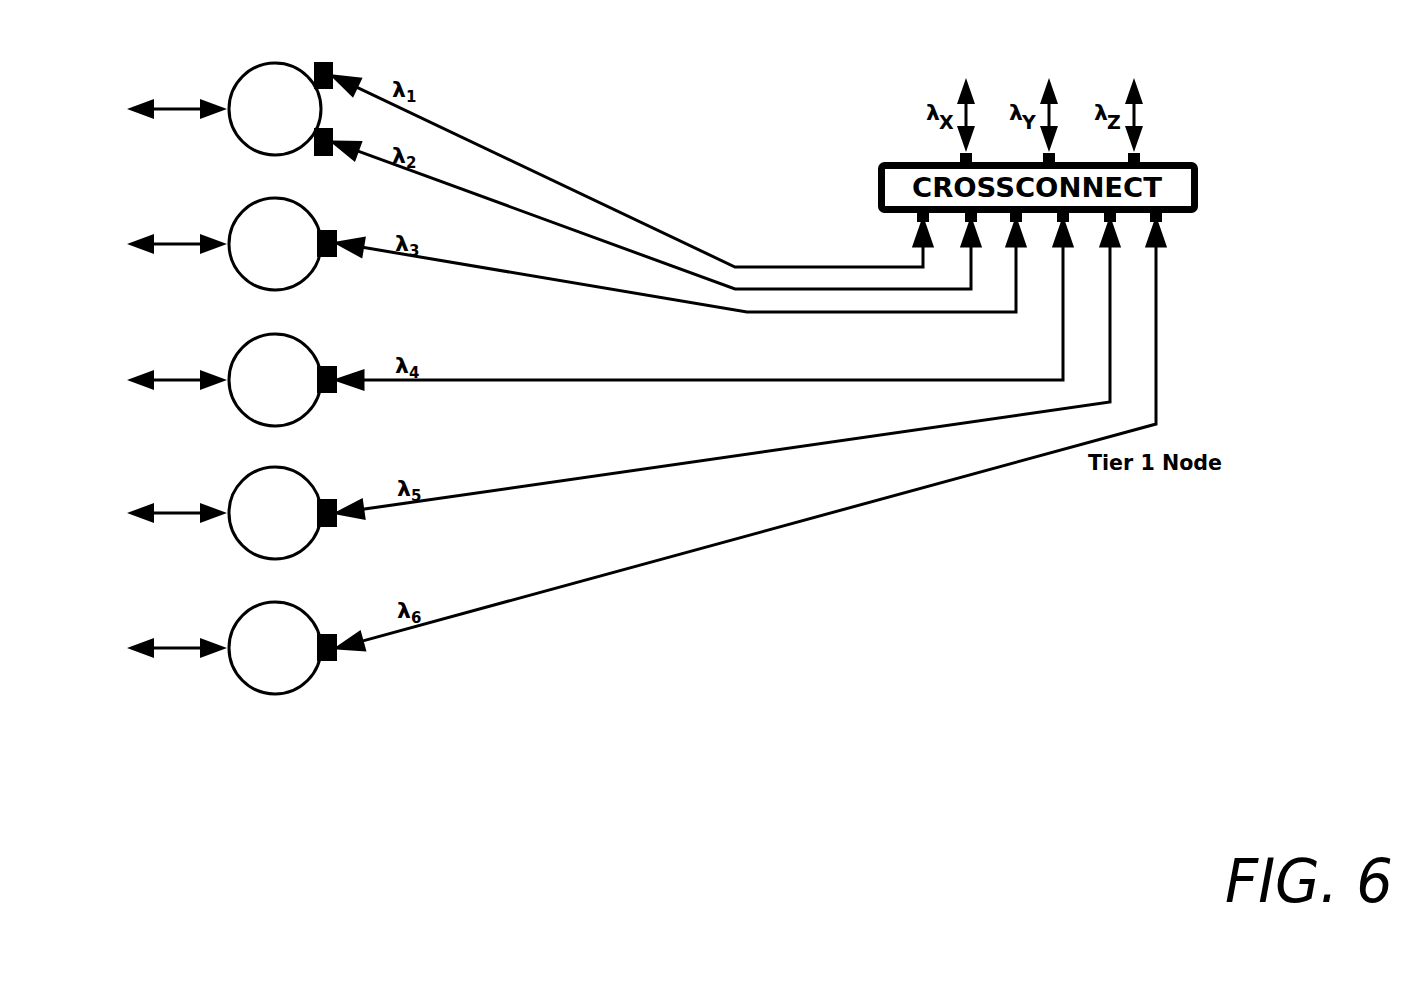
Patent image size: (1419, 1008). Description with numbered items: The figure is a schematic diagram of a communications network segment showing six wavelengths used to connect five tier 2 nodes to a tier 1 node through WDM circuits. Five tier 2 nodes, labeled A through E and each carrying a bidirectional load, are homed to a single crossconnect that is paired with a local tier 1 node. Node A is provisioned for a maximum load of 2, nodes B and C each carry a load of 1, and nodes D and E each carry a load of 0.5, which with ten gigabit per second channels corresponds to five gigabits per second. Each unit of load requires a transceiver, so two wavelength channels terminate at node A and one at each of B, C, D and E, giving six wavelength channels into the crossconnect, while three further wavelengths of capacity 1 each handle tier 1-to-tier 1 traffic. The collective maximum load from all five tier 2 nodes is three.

The maximum load of tier 2 node A 2 is at (207, 109).
The maximum load of tier 2 nodes B and C 1 is at (612, 238).
The maximum load of tier 2 nodes D and E 0.5 is at (203, 580).